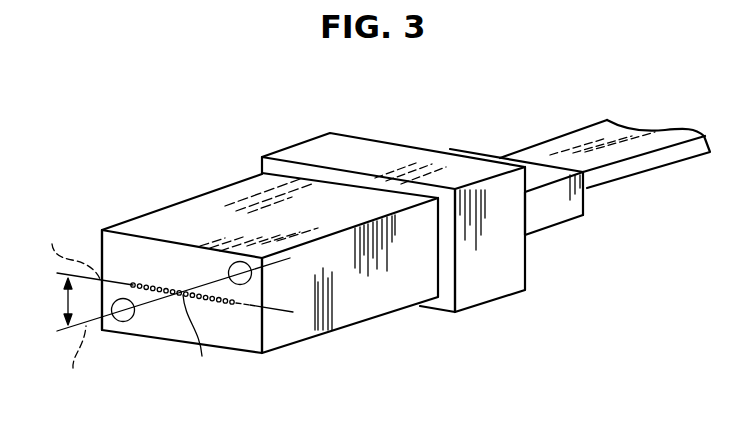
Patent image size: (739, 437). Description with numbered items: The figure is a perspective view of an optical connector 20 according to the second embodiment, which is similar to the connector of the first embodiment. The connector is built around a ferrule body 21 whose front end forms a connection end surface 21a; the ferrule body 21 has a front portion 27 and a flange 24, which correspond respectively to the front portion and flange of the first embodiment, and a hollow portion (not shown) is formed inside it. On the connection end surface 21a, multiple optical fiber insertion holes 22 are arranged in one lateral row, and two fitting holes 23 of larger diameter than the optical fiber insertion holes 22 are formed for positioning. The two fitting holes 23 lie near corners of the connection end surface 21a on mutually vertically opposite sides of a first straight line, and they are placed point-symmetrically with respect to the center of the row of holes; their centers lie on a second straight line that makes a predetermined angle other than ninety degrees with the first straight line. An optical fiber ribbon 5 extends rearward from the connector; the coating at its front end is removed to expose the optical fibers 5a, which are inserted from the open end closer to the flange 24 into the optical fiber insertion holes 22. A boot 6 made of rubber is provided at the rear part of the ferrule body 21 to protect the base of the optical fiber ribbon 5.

The optical connector 20 is at (182, 150).
The ferrule body 21 is at (308, 102).
The connection end surface 21a is at (128, 248).
The optical fiber insertion holes 22 is at (178, 353).
The optical fibers 5a is at (158, 290).
The fitting holes 23 is at (122, 320).
The flange 24 is at (305, 163).
The front portion 27 is at (260, 190).
The optical fiber ribbon 5 is at (581, 138).
The boot 6 is at (567, 214).